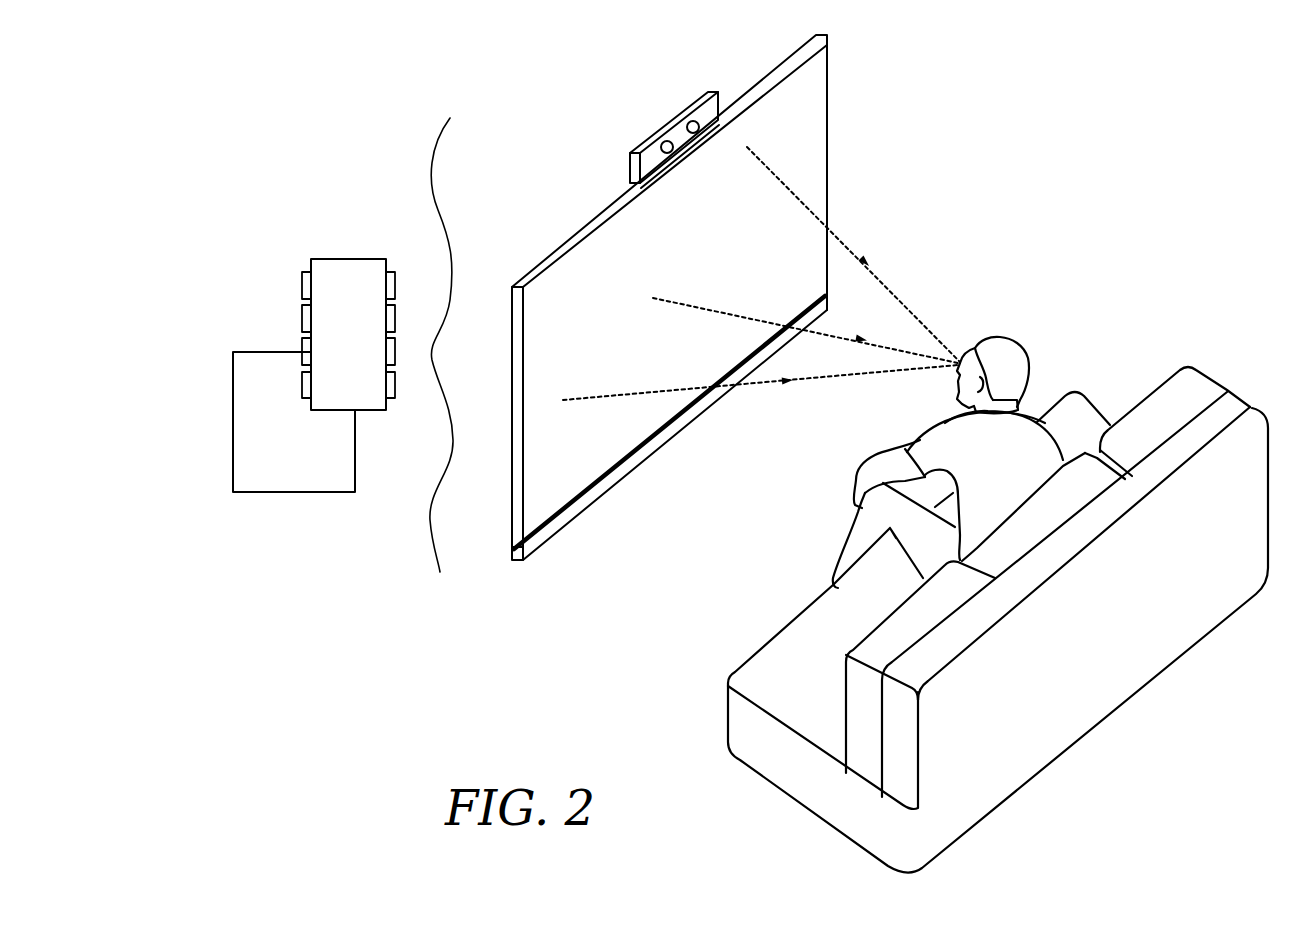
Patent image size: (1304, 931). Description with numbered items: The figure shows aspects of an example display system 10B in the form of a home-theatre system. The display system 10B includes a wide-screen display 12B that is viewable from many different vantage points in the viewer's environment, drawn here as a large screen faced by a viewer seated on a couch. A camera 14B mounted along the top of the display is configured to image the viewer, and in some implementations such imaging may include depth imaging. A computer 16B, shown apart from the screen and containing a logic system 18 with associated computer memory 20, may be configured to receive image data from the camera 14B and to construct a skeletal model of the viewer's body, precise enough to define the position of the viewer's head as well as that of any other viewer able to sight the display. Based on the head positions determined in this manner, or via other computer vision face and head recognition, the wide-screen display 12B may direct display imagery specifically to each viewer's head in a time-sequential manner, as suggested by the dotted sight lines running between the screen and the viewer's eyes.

The display system 10B is at (1020, 172).
The wide-screen display 12B is at (598, 326).
The camera 14B is at (630, 163).
The computer 16B is at (208, 323).
The logic system 18 is at (305, 433).
The computer memory 20 is at (360, 346).